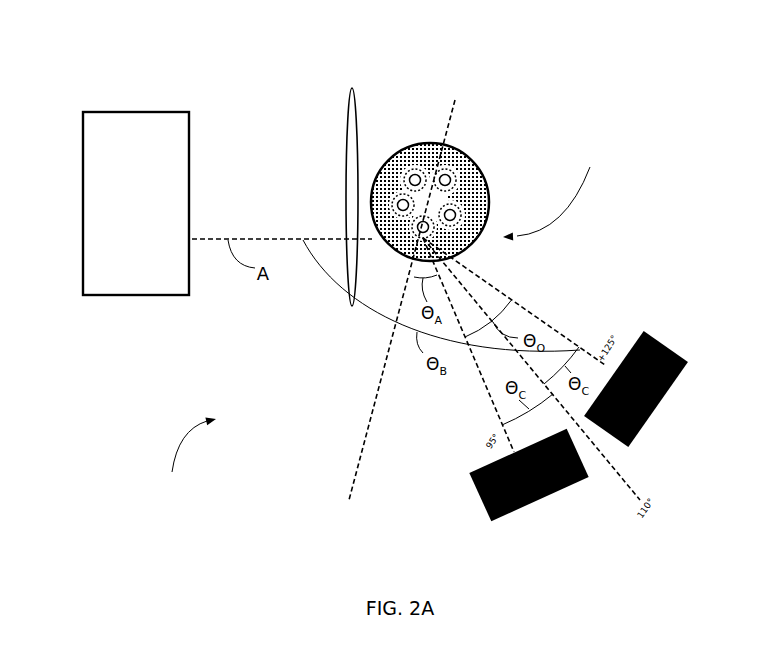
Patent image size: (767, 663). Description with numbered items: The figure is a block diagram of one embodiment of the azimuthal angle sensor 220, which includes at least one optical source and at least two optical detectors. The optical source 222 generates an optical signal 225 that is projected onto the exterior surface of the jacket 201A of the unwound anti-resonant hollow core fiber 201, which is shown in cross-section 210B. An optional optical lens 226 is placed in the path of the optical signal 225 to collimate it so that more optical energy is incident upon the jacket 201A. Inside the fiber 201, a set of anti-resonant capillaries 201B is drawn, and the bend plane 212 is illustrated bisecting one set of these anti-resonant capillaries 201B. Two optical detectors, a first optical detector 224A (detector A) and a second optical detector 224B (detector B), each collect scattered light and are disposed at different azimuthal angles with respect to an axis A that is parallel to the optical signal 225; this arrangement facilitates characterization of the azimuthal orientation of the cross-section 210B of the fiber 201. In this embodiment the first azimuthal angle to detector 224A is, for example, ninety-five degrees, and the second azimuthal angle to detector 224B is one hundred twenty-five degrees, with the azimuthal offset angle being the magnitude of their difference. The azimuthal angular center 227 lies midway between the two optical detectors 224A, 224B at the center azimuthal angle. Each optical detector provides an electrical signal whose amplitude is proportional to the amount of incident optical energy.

The optical source 222 is at (136, 203).
The optical signal 225 is at (413, 202).
The optical lens 226 is at (360, 137).
The unwound anti-resonant hollow core fiber 201 is at (505, 168).
The jacket 201A is at (405, 147).
The anti-resonant capillaries 201B is at (440, 238).
The cross-section 210B is at (562, 194).
The bend plane 212 is at (391, 343).
The azimuthal angle sensor 220 is at (185, 458).
The first optical detector 224A is at (482, 495).
The second optical detector 224B is at (660, 340).
The azimuthal angular center 227 is at (622, 472).